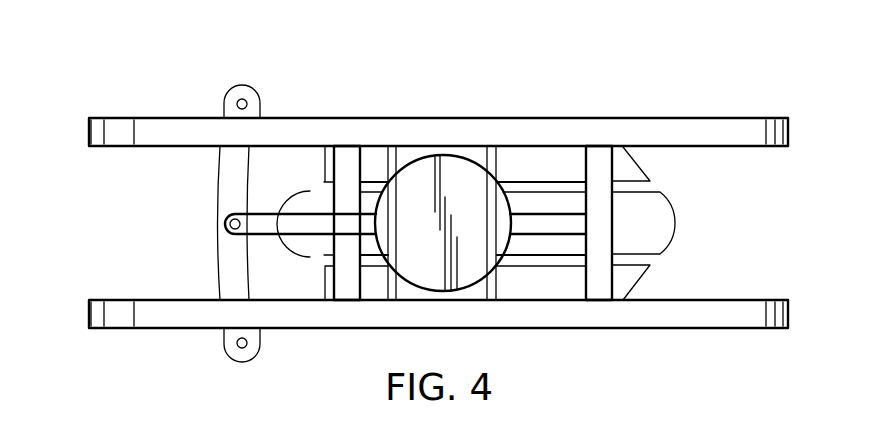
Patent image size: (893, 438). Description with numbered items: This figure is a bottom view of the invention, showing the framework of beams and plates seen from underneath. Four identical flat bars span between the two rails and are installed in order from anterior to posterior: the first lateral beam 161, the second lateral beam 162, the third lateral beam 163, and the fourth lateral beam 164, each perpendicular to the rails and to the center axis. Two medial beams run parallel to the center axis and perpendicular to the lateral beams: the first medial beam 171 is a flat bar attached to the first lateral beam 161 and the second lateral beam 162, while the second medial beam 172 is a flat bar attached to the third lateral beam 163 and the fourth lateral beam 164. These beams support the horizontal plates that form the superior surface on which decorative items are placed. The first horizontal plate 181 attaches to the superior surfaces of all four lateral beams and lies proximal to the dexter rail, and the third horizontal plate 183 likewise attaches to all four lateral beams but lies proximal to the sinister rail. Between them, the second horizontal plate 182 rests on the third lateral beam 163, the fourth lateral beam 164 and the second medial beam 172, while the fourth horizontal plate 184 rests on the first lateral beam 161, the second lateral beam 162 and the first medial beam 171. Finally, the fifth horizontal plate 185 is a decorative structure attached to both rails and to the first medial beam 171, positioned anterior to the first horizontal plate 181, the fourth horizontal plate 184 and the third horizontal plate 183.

The first lateral beam 161 is at (352, 163).
The second lateral beam 162 is at (392, 155).
The third lateral beam 163 is at (492, 157).
The fourth lateral beam 164 is at (603, 163).
The first medial beam 171 is at (306, 216).
The second medial beam 172 is at (545, 223).
The first horizontal plate 181 is at (625, 280).
The second horizontal plate 182 is at (658, 223).
The third horizontal plate 183 is at (630, 165).
The fourth horizontal plate 184 is at (300, 247).
The fifth horizontal plate 185 is at (218, 262).